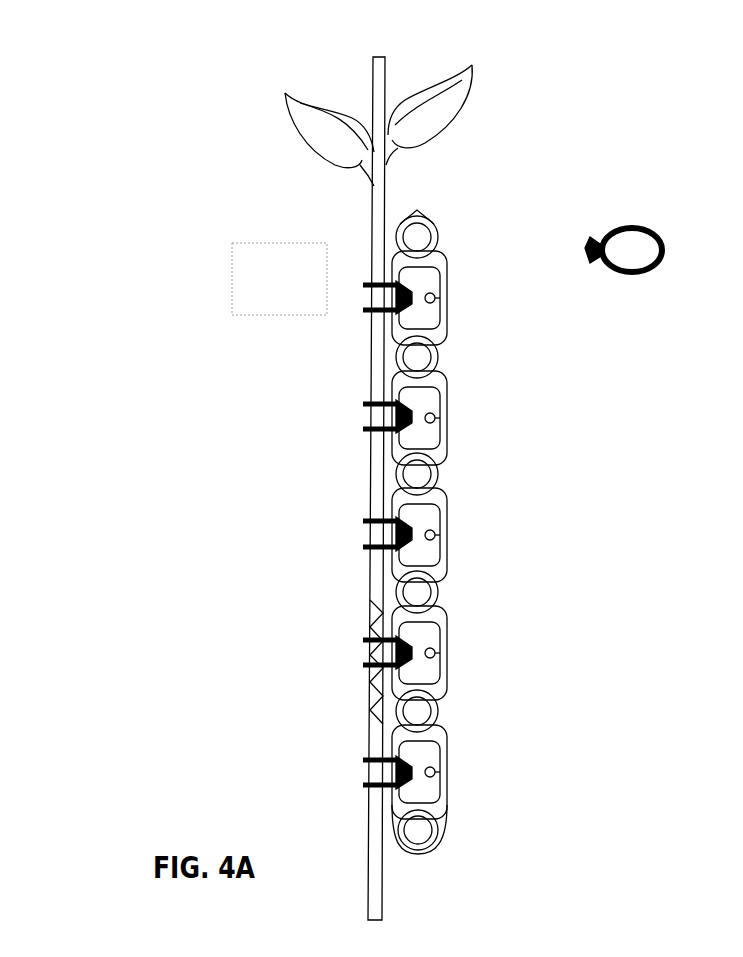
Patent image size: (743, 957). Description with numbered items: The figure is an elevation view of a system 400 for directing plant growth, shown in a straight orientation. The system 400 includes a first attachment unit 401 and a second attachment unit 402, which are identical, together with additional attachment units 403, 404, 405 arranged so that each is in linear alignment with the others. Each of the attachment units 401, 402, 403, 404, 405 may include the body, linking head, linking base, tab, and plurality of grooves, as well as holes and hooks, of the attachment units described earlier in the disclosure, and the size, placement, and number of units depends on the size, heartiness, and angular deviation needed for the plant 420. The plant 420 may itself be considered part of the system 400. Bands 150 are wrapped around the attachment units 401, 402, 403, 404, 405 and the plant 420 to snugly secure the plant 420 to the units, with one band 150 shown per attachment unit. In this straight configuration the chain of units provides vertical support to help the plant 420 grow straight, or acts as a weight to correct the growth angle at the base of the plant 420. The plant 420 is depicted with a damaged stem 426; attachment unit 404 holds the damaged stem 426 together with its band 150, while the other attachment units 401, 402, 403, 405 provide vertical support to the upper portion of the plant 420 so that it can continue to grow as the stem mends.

The system 400 is at (520, 61).
The plant 420 is at (283, 92).
The damaged stem 426 is at (370, 702).
The first attachment unit 401 is at (448, 272).
The second attachment unit 402 is at (448, 400).
The attachment unit 403 is at (448, 517).
The attachment unit 404 is at (448, 638).
The attachment unit 405 is at (448, 752).
The band 150 is at (625, 228).